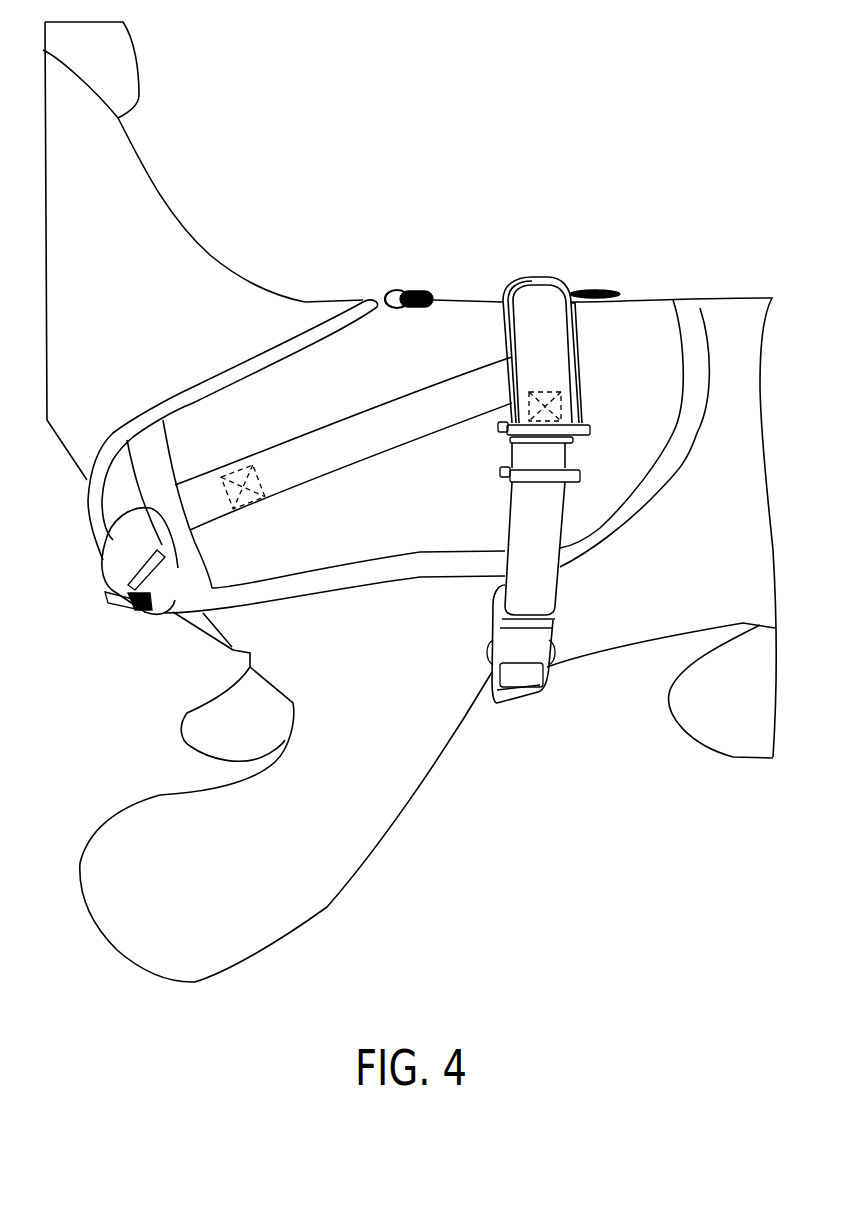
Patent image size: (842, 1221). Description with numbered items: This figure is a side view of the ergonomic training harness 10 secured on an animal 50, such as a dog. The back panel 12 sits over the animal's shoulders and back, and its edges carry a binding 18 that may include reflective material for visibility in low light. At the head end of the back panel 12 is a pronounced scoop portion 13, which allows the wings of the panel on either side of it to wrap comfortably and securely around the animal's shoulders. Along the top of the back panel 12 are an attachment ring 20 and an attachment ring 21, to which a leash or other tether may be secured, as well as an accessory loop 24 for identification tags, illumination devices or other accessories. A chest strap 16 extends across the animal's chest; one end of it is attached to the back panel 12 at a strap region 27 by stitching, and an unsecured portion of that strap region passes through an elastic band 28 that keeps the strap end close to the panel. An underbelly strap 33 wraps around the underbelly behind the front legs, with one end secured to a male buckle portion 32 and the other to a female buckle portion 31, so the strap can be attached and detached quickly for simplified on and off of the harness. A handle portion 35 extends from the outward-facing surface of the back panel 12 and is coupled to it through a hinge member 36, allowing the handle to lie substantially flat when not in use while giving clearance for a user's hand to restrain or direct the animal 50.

The ergonomic training harness 10 is at (632, 200).
The back panel 12 is at (654, 327).
The scoop portion 13 is at (322, 310).
The chest strap 16 is at (110, 567).
The binding 18 is at (182, 390).
The attachment ring 20 is at (606, 290).
The attachment ring 21 is at (572, 463).
The accessory loop 24 is at (420, 288).
The strap region 27 is at (348, 440).
The elastic band 28 is at (140, 620).
The female buckle portion 31 is at (552, 638).
The male buckle portion 32 is at (553, 660).
The underbelly strap 33 is at (543, 543).
The handle portion 35 is at (542, 303).
The hinge member 36 is at (500, 430).
The animal 50 is at (215, 267).